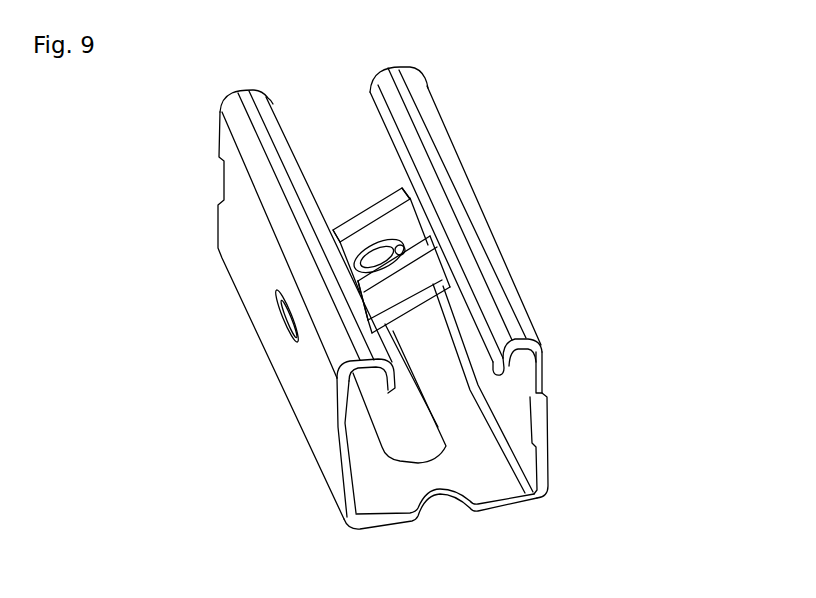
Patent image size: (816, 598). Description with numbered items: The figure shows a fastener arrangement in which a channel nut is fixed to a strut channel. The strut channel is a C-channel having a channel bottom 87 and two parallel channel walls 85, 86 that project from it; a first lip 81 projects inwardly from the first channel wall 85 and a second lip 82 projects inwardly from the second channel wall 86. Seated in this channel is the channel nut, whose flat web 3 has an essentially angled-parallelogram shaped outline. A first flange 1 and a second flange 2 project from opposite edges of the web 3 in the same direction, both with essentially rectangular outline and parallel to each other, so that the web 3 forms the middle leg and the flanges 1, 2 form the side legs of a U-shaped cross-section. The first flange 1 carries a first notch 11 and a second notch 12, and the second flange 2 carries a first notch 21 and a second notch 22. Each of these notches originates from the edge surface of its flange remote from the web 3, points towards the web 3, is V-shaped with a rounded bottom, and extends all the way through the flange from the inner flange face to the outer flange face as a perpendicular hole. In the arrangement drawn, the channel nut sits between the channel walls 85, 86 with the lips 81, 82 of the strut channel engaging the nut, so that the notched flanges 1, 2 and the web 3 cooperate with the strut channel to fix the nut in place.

The first flange 1 is at (415, 280).
The second flange 2 is at (367, 217).
The web 3 is at (420, 235).
The first notch 11 is at (357, 297).
The second notch 12 is at (442, 253).
The first notch 21 is at (335, 240).
The second notch 22 is at (412, 187).
The first lip 81 is at (387, 382).
The second lip 82 is at (500, 362).
The first channel wall 85 is at (237, 188).
The second channel wall 86 is at (543, 383).
The channel bottom 87 is at (497, 478).